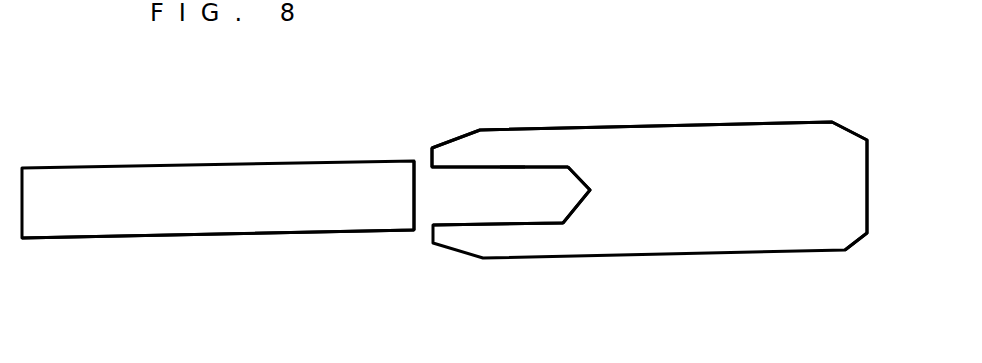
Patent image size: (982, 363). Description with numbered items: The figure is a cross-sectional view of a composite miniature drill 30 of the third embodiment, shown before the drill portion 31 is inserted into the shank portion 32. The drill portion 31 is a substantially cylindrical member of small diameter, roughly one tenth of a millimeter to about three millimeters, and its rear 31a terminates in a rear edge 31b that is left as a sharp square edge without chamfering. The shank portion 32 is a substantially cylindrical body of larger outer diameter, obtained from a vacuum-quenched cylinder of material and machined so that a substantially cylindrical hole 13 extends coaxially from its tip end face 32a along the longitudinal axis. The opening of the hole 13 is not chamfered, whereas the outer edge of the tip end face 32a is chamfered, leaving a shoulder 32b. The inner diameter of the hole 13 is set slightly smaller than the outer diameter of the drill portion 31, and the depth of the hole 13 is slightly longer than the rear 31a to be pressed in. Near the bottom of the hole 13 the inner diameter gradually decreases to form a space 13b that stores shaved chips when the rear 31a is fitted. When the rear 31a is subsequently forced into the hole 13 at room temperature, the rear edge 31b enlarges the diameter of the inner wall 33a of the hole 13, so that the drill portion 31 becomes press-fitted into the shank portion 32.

The miniature drill 30 is at (441, 108).
The drill portion 31 is at (207, 163).
The rear of the drill portion 31a is at (348, 236).
The rear edge 31b is at (415, 214).
The shank portion 32 is at (713, 123).
The tip end face 32a is at (418, 140).
The shoulder 32b is at (432, 167).
The inner wall of the hole 33a is at (546, 224).
The hole 13 is at (503, 166).
The space 13b is at (583, 186).